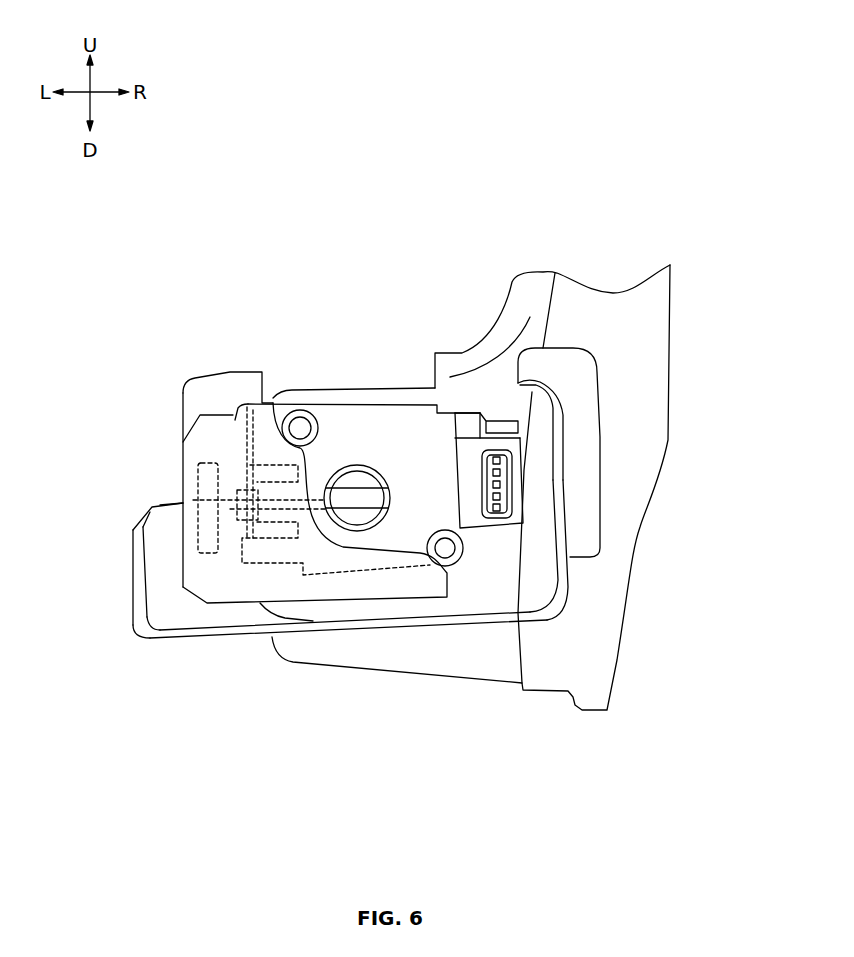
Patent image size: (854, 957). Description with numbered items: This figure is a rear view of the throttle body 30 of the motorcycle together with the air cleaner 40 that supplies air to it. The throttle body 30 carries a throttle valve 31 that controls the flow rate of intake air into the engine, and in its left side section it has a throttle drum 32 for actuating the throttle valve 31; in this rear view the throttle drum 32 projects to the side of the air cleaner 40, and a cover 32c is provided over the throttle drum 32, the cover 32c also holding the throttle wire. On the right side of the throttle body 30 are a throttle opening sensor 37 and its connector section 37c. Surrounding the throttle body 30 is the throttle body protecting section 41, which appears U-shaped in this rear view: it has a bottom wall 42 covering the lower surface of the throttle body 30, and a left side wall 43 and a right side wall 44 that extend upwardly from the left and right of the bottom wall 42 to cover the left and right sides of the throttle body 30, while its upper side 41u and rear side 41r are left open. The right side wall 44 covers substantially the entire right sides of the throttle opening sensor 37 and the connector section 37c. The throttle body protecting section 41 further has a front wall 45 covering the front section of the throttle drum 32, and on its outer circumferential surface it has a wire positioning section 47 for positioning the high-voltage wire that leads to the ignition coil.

The throttle body 30 is at (344, 424).
The throttle valve 31 is at (365, 480).
The throttle drum 32 is at (208, 460).
The cover 32c is at (181, 453).
The throttle opening sensor 37 is at (517, 442).
The connector section 37c is at (505, 477).
The air cleaner 40 is at (648, 609).
The throttle body protecting section 41 is at (129, 639).
The upper side 41u is at (158, 474).
The rear side 41r is at (478, 585).
The bottom wall 42 is at (193, 633).
The left side wall 43 is at (133, 568).
The right side wall 44 is at (562, 488).
The front wall 45 is at (163, 542).
The wire positioning section 47 is at (602, 413).